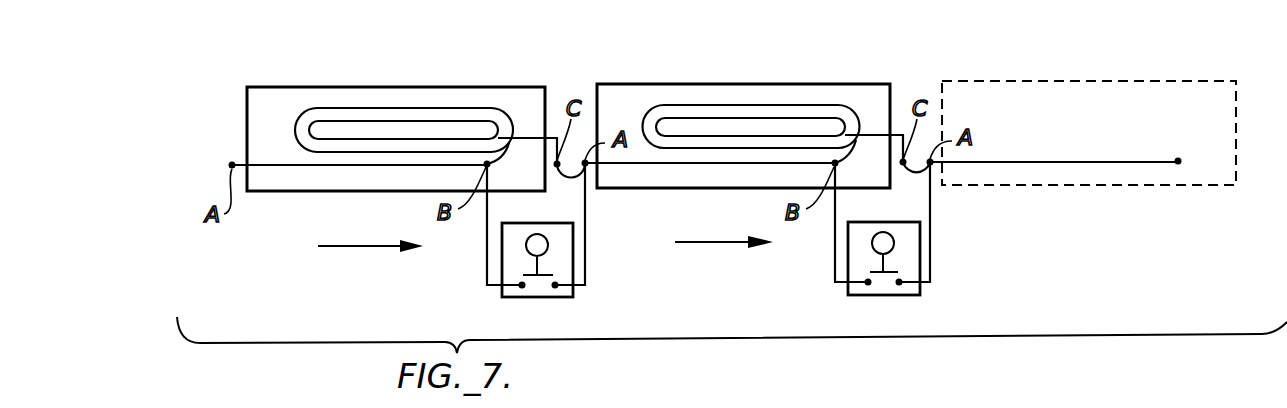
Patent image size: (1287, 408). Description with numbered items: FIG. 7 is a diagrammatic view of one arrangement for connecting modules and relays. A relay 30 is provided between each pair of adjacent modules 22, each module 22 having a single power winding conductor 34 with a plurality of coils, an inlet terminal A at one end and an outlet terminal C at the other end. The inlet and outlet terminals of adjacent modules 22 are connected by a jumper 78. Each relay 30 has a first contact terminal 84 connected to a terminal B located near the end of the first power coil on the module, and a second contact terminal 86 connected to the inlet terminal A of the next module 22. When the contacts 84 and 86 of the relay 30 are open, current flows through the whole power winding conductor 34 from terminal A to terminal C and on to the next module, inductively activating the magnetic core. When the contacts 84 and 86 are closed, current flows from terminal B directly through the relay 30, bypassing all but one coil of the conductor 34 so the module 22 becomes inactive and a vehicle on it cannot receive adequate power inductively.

The module 22 is at (309, 80).
The power winding conductor 34 is at (412, 108).
The jumper 78 is at (571, 178).
The relay 30 is at (562, 248).
The first contact terminal 84 is at (520, 289).
The second contact terminal 86 is at (557, 289).